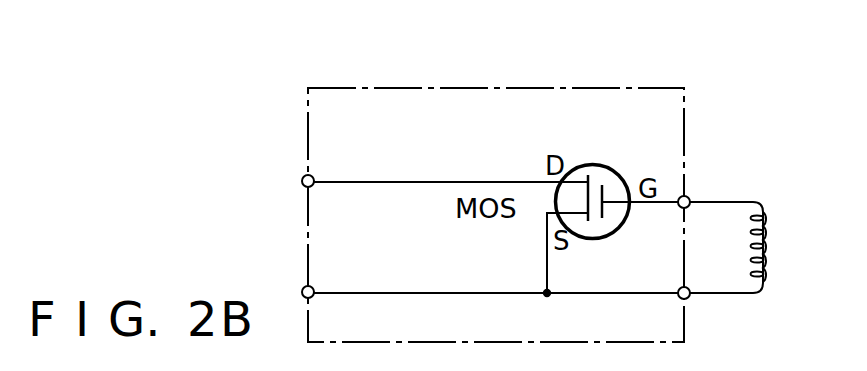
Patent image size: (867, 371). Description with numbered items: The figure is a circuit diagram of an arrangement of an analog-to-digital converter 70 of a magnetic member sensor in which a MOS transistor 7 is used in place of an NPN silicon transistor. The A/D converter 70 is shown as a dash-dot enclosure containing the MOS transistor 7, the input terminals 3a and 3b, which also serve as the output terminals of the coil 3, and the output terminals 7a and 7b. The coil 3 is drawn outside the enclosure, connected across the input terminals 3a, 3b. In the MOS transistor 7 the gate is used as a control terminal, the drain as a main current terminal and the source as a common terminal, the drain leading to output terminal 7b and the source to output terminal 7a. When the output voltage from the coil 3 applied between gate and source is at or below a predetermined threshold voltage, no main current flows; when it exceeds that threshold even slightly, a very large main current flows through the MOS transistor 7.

The A/D converter 70 is at (550, 86).
The MOS transistor 7 is at (590, 164).
The output terminal 7a is at (302, 290).
The output terminal 7b is at (303, 176).
The input terminal 3a is at (689, 198).
The input terminal 3b is at (688, 298).
The coil 3 is at (768, 238).